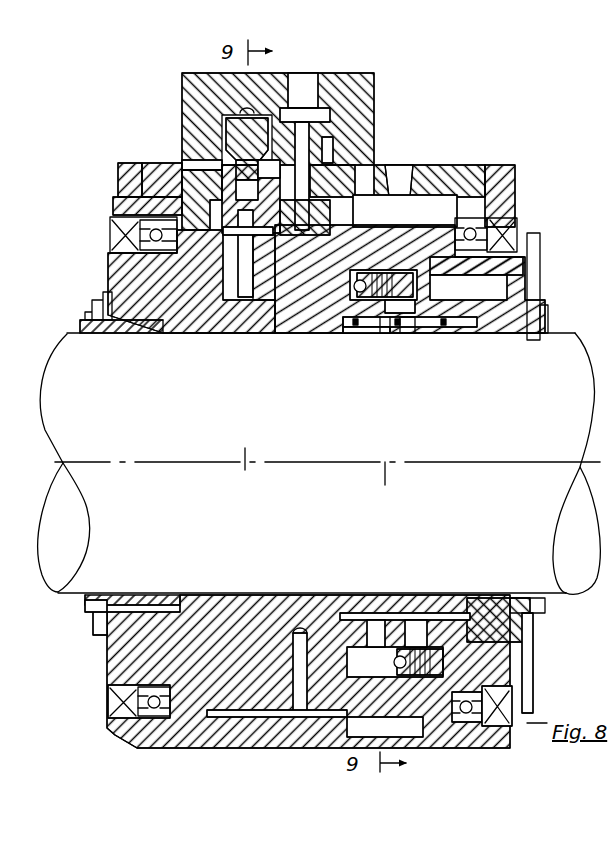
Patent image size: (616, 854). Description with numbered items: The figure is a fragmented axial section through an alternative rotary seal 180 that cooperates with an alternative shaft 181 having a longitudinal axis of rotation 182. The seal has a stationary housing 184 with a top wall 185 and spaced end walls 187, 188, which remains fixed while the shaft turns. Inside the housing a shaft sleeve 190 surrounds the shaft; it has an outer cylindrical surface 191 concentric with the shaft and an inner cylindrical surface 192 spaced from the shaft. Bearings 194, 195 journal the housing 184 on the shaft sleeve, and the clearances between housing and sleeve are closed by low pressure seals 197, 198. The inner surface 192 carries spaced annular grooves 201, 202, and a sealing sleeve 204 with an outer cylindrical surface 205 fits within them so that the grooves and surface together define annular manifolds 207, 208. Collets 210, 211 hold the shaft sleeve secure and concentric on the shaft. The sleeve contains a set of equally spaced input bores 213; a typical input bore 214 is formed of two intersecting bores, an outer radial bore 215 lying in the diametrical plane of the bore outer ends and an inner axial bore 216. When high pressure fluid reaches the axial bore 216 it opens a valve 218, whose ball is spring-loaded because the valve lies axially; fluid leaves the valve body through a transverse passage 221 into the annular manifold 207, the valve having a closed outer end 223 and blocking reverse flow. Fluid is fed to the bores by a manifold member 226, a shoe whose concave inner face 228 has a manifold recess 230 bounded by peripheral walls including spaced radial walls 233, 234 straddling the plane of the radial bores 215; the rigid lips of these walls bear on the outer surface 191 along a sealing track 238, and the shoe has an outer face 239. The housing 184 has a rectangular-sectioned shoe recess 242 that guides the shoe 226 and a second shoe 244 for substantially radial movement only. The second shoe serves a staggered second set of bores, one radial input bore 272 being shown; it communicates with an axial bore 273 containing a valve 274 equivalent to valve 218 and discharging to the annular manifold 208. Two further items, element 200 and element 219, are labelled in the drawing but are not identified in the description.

The rotary seal 180 is at (408, 133).
The shaft 181 is at (319, 463).
The longitudinal axis of rotation 182 is at (136, 460).
The housing 184 is at (556, 133).
The top wall 185 is at (140, 160).
The end wall 187 is at (516, 186).
The end wall 188 is at (128, 183).
The shaft sleeve 190 is at (106, 276).
The outer cylindrical surface 191 is at (372, 236).
The inner cylindrical surface 192 is at (385, 320).
The bearing 194 is at (146, 222).
The bearing 195 is at (470, 222).
The low pressure seal 197 is at (118, 240).
The low pressure seal 198 is at (497, 224).
The hub 200 is at (338, 318).
The annular groove 201 is at (374, 320).
The annular groove 202 is at (402, 320).
The sealing sleeve 204 is at (408, 325).
The outer cylindrical surface 205 is at (425, 318).
The annular manifold 207 is at (375, 612).
The annular manifold 208 is at (445, 608).
The collet 210 is at (88, 324).
The collet 211 is at (545, 321).
The input bores 213 is at (236, 300).
The input bore 214 is at (240, 283).
The radial bore 215 is at (245, 268).
The axial bore 216 is at (298, 295).
The valve 218 is at (353, 268).
The direction of rotation 219 is at (445, 432).
The transverse passage 221 is at (370, 268).
The closed outer end 223 is at (428, 268).
The manifold member 226 is at (218, 160).
The inner face 228 is at (240, 234).
The manifold recess 230 is at (258, 218).
The radial wall 233 is at (226, 218).
The radial wall 234 is at (280, 236).
The sealing track 238 is at (262, 267).
The outer face 239 is at (225, 170).
The shoe recess 242 is at (322, 185).
The second shoe 244 is at (322, 186).
The input bore 272 is at (292, 660).
The axial bore 273 is at (350, 650).
The valve 274 is at (424, 676).